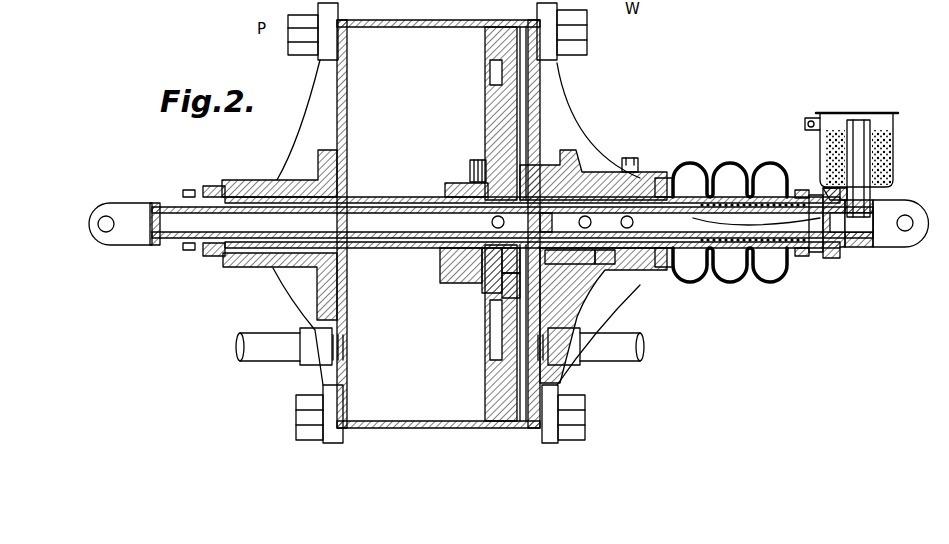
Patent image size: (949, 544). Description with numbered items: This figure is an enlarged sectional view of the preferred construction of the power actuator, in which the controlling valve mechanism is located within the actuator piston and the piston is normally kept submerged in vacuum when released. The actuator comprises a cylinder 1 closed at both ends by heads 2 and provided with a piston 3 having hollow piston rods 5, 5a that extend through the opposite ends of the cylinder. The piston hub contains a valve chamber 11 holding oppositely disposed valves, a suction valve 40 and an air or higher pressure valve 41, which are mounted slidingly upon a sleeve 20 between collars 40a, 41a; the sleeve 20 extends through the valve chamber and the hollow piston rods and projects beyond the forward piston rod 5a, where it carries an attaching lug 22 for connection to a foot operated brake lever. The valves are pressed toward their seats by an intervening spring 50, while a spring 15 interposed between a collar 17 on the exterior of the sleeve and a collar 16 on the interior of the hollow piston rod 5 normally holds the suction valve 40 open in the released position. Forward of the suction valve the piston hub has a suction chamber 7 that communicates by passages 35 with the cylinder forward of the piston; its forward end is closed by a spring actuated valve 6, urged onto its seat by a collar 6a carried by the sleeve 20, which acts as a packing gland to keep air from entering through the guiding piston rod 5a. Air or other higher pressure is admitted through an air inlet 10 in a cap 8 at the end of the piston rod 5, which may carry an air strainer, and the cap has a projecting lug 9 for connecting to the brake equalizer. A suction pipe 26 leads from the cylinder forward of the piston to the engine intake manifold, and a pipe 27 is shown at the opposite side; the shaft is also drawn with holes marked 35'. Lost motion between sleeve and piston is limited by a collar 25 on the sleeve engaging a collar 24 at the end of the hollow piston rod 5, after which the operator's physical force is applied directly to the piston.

The cylinder 1 is at (436, 20).
The heads 2 is at (338, 82).
The piston 3 is at (515, 110).
The spring 50 is at (543, 163).
The suction chamber 7 is at (477, 168).
The collar 6a is at (448, 185).
The hollow piston rod 5a is at (387, 197).
The shaft with holes 35' is at (512, 222).
The attaching lug 22 is at (127, 217).
The sleeve 20 is at (200, 246).
The spring actuated valve 6 is at (442, 262).
The passage 35 is at (465, 276).
The collar 40a is at (498, 280).
The suction valve 40 is at (505, 285).
The valve chamber 11 is at (572, 300).
The air valve 41 is at (585, 274).
The collar 41a is at (610, 272).
The hollow piston rod 5 is at (712, 184).
The collar 16 is at (700, 272).
The spring 15 is at (773, 250).
The collar 17 is at (800, 257).
The collar 24 is at (817, 254).
The collar 25 is at (833, 252).
The cap 8 is at (862, 247).
The projecting lug 9 is at (923, 226).
The air inlet 10 is at (855, 130).
The suction pipe 26 is at (263, 356).
The right pipe 27 is at (617, 358).